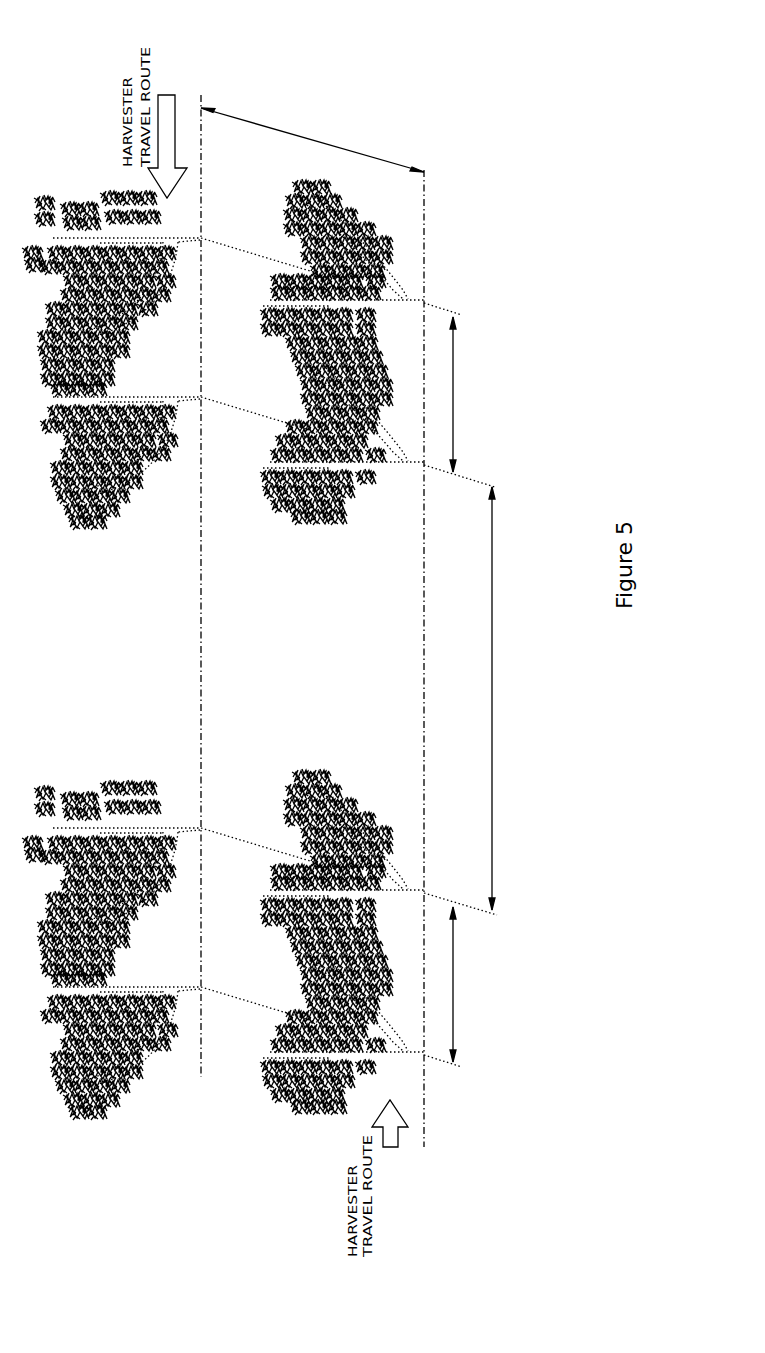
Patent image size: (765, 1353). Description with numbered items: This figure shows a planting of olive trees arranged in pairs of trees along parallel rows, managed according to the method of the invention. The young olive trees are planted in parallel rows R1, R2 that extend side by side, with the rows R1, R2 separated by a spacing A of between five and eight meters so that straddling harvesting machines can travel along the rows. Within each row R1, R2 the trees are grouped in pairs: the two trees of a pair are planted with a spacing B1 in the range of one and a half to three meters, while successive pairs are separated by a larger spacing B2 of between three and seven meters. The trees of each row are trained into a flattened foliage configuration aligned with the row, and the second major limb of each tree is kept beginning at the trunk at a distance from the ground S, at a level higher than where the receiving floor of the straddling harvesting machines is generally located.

The spacing between rows A is at (312, 140).
The distance from the ground S is at (437, 658).
The spacing between the trees of the pair B1 is at (460, 685).
The spacing between two pairs of trees B2 is at (507, 698).
The row R1 is at (171, 655).
The row R2 is at (342, 647).